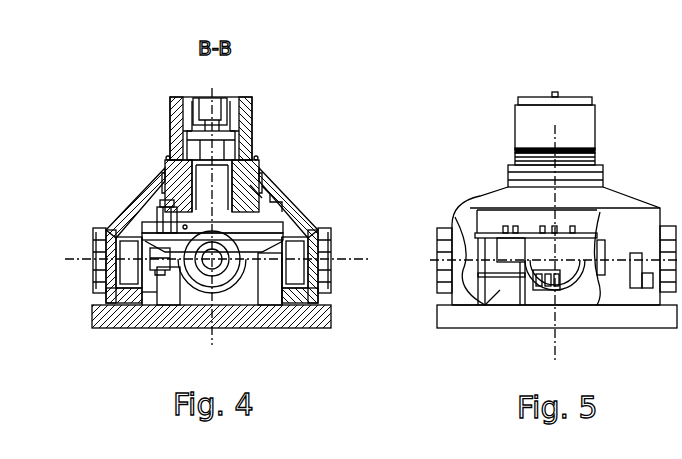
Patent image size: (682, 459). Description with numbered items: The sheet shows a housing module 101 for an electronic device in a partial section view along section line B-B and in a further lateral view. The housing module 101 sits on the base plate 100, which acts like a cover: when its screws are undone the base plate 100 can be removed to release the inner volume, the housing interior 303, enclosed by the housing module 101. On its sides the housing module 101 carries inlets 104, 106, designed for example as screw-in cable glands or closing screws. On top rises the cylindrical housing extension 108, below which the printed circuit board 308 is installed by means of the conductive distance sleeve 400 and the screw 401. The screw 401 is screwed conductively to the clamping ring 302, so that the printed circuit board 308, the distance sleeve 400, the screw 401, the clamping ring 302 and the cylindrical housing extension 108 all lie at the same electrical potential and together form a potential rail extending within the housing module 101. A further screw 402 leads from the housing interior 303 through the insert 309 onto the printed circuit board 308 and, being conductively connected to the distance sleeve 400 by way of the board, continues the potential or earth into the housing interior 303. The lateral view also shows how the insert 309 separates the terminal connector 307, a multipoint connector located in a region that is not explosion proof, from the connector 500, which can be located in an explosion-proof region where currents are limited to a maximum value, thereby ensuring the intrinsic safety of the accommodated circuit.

In FIG. 5, the base plate 100 is at (645, 316).
In FIG. 4, the housing module 101 is at (273, 192).
In FIG. 5, the housing module 101 is at (620, 192).
In FIG. 4, the inlet 104 is at (328, 230).
In FIG. 4, the inlet 106 is at (100, 230).
In FIG. 4, the cylindrical housing extension 108 is at (252, 108).
In FIG. 5, the cylindrical housing extension 108 is at (597, 112).
In FIG. 4, the clamping ring 302 is at (160, 198).
In FIG. 4, the housing interior 303 is at (150, 295).
In FIG. 5, the terminal connector 307 is at (590, 294).
In FIG. 4, the printed circuit board 308 is at (297, 210).
In FIG. 4, the insert 309 is at (270, 256).
In FIG. 5, the insert 309 is at (492, 325).
In FIG. 4, the distance sleeve 400 is at (120, 200).
In FIG. 4, the screw 401 is at (183, 292).
In FIG. 4, the screw 402 is at (156, 294).
In FIG. 5, the connector 500 is at (455, 223).